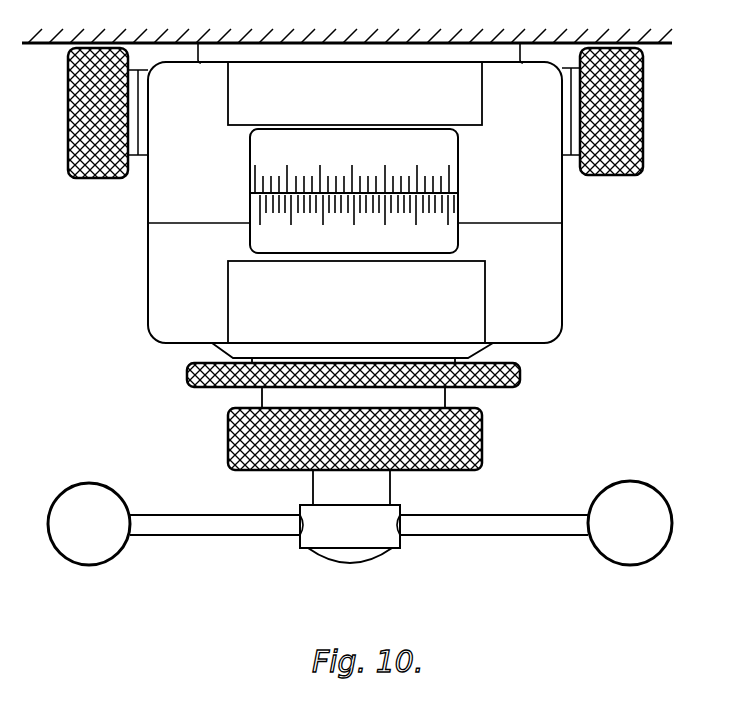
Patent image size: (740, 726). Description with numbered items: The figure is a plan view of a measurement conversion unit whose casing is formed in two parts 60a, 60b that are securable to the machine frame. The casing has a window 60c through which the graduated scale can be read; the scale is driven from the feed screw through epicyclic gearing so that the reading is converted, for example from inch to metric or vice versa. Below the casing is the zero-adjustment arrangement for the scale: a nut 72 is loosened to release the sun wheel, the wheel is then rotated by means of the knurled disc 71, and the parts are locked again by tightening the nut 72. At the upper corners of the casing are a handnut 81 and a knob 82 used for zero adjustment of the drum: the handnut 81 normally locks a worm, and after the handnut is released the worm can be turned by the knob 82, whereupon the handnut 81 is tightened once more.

The casing part 60a is at (540, 262).
The casing part 60b is at (545, 192).
The window 60c is at (440, 233).
The knurled disc 71 is at (187, 375).
The nut 72 is at (228, 441).
The handnut 81 is at (98, 178).
The knob 82 is at (603, 180).